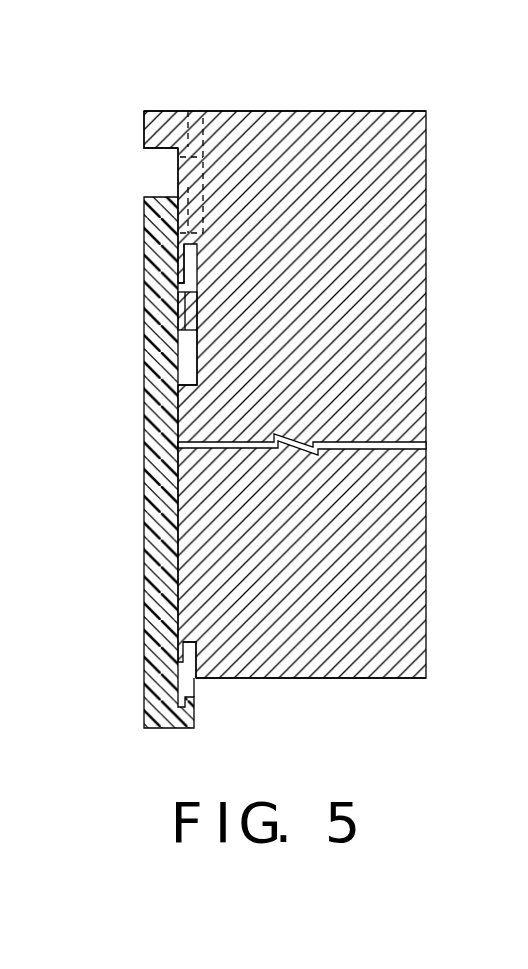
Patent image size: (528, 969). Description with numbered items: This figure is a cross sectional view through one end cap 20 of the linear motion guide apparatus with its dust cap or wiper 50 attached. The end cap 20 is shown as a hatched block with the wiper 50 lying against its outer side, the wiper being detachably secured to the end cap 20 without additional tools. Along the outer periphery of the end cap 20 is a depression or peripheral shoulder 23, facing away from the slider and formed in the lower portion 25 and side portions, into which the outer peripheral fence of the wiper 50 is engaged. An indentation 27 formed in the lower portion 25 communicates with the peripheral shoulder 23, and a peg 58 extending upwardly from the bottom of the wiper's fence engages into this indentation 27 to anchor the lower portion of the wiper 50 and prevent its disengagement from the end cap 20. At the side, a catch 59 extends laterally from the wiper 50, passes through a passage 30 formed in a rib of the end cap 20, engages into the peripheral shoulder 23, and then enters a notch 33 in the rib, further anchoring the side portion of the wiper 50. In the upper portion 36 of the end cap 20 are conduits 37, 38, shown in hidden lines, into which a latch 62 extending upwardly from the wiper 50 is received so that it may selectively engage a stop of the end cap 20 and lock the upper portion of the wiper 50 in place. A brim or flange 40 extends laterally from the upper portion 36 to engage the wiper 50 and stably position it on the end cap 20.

The end cap 20 is at (390, 210).
The peripheral shoulder 23 is at (193, 680).
The lower portion 25 is at (387, 692).
The indentation 27 is at (190, 652).
The passage 30 is at (190, 368).
The notch 33 is at (192, 263).
The upper portion 36 is at (368, 102).
The conduit 37 is at (178, 170).
The conduit 38 is at (188, 110).
The flange 40 is at (144, 124).
The wiper 50 is at (131, 547).
The peg 58 is at (196, 699).
The catch 59 is at (192, 310).
The latch 62 is at (200, 174).